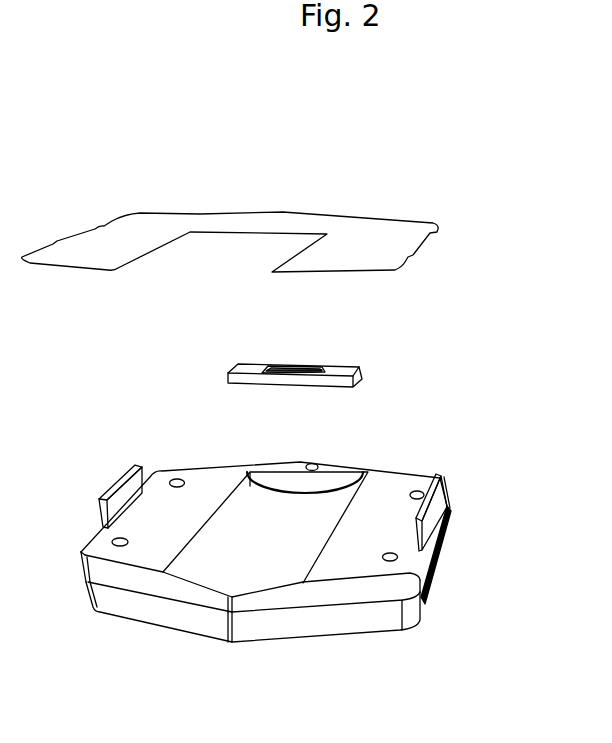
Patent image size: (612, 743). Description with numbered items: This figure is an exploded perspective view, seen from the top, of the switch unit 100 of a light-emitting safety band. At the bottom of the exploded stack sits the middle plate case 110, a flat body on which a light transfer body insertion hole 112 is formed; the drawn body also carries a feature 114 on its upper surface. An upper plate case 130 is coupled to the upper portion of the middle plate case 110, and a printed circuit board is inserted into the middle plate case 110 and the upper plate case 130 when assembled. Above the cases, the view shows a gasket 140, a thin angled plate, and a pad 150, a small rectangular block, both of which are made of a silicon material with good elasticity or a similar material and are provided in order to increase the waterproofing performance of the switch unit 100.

The switch unit 100 is at (391, 181).
The middle plate case 110 is at (443, 489).
The light transfer body insertion hole 112 is at (247, 566).
The cylindrical seat 114 is at (309, 484).
The upper plate case 130 is at (444, 541).
The gasket 140 is at (434, 243).
The pad 150 is at (359, 353).